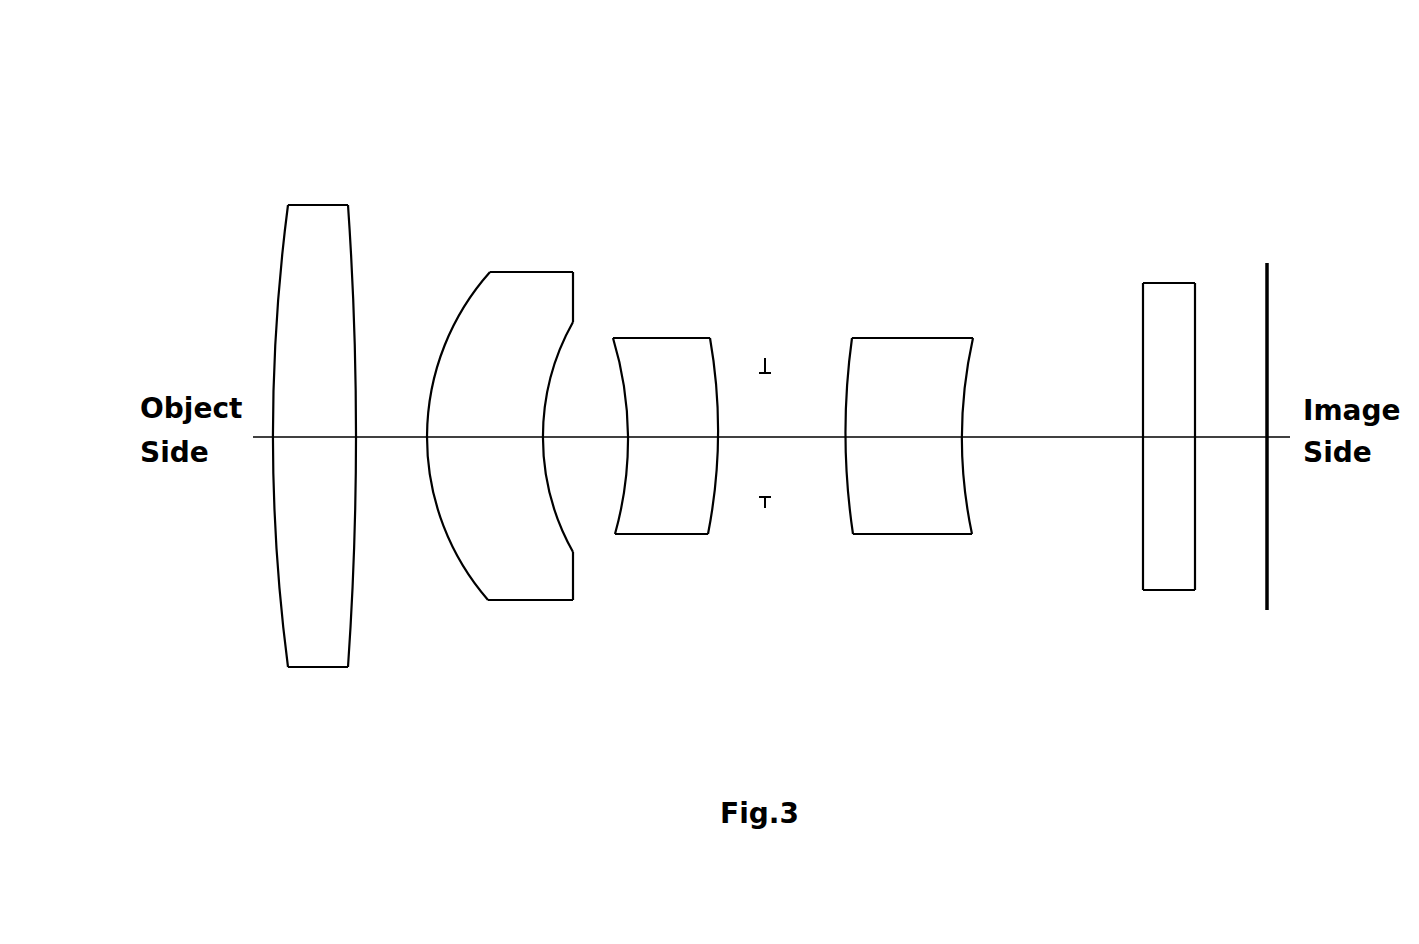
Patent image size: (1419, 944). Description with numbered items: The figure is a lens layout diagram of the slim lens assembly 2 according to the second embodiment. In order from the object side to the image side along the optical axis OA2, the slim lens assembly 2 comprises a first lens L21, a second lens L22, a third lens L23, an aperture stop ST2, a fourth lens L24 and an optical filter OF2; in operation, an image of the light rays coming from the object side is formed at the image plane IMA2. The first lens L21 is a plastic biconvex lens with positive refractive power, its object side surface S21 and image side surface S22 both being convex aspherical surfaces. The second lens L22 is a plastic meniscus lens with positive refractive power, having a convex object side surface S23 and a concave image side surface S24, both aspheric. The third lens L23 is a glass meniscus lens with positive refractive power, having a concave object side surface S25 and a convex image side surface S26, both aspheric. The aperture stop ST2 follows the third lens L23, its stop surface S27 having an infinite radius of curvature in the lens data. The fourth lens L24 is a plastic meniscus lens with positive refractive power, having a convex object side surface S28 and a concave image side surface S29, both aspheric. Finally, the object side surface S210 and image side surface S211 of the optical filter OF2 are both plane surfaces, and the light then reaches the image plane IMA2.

The slim lens assembly 2 is at (197, 93).
The optical axis OA2 is at (252, 478).
The first lens L21 is at (288, 429).
The second lens L22 is at (472, 433).
The third lens L23 is at (645, 401).
The fourth lens L24 is at (891, 416).
The aperture stop ST2 is at (769, 394).
The optical filter OF2 is at (1125, 430).
The image plane IMA2 is at (1267, 263).
The object side surface of the first lens S21 is at (279, 582).
The image side surface of the first lens S22 is at (352, 582).
The object side surface of the second lens S23 is at (446, 545).
The image side surface of the second lens S24 is at (549, 512).
The object side surface of the third lens S25 is at (626, 487).
The image side surface of the third lens S26 is at (718, 487).
The stop surface S27 is at (765, 508).
The object side surface of the fourth lens S28 is at (846, 487).
The image side surface of the fourth lens S29 is at (963, 487).
The object side surface of the optical filter S210 is at (1143, 487).
The image side surface of the optical filter S211 is at (1195, 520).